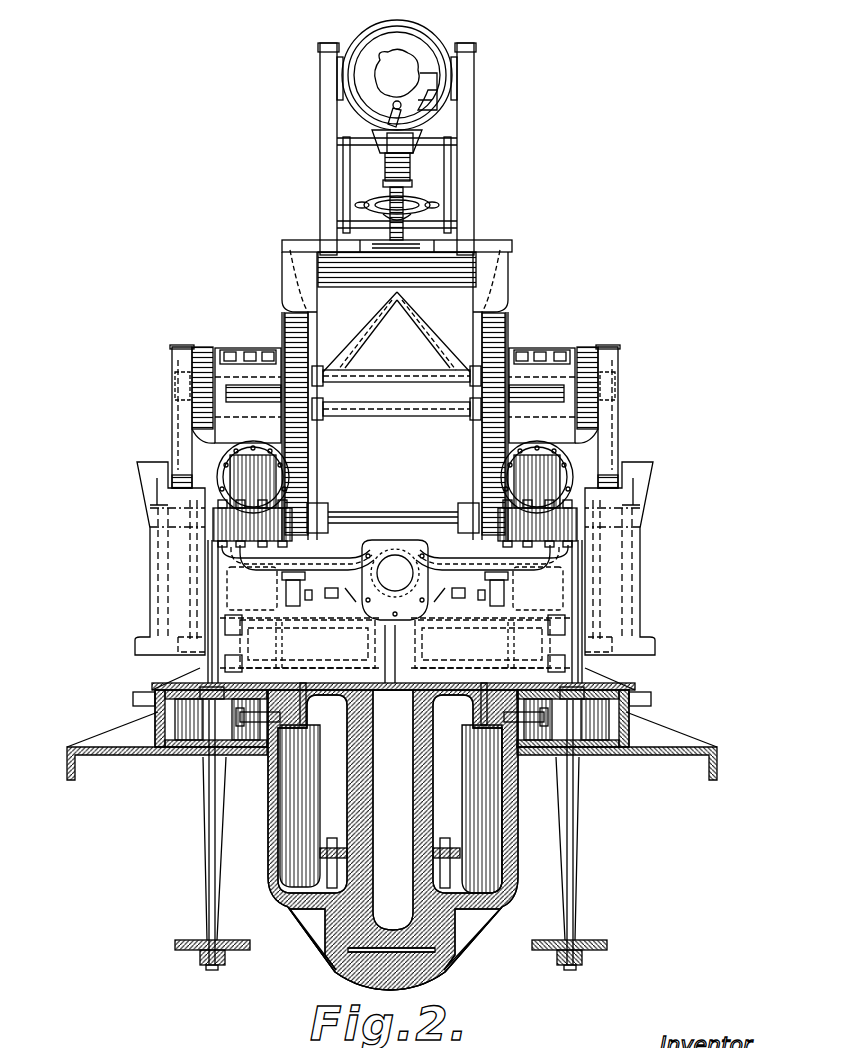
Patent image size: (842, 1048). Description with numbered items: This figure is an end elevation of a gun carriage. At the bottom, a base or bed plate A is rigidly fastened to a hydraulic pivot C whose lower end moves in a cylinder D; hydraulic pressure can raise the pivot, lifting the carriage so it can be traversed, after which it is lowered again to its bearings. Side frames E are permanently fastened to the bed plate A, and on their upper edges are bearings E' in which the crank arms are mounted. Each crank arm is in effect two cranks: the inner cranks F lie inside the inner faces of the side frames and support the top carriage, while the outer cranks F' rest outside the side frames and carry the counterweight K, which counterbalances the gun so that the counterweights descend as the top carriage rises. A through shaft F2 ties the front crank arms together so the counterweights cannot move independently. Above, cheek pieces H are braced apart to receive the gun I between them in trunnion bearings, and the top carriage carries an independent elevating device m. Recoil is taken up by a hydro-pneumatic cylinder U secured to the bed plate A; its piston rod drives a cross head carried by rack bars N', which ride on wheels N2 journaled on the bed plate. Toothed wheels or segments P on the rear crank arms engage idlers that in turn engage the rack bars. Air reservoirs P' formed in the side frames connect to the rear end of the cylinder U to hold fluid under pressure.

The gun I is at (415, 50).
The cheek pieces H is at (320, 152).
The elevating device m is at (405, 165).
The inner cranks F is at (389, 390).
The through shaft F2 is at (410, 410).
The toothed wheels or segments P is at (393, 423).
The side frames E is at (213, 374).
The bearings E' is at (592, 383).
The outer cranks F' is at (392, 416).
The air reservoirs P' is at (395, 477).
The hydro-pneumatic cylinder U is at (386, 560).
The counterweight K is at (160, 586).
The rack bars N' is at (395, 611).
The wheels N2 is at (492, 605).
The base or bed plate A is at (578, 662).
The hydraulic pivot C is at (352, 790).
The cylinder D is at (455, 936).